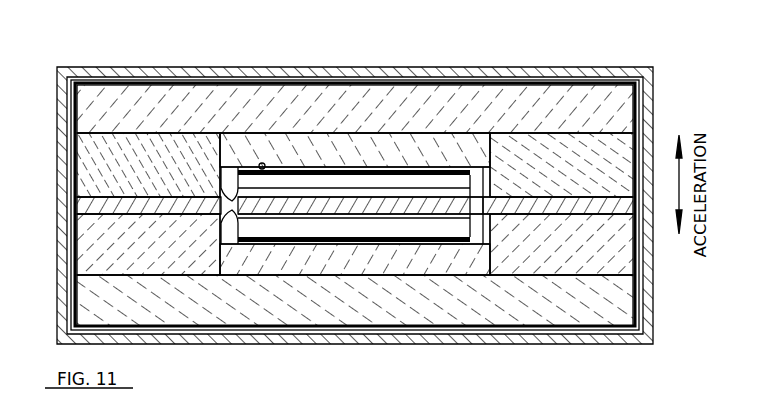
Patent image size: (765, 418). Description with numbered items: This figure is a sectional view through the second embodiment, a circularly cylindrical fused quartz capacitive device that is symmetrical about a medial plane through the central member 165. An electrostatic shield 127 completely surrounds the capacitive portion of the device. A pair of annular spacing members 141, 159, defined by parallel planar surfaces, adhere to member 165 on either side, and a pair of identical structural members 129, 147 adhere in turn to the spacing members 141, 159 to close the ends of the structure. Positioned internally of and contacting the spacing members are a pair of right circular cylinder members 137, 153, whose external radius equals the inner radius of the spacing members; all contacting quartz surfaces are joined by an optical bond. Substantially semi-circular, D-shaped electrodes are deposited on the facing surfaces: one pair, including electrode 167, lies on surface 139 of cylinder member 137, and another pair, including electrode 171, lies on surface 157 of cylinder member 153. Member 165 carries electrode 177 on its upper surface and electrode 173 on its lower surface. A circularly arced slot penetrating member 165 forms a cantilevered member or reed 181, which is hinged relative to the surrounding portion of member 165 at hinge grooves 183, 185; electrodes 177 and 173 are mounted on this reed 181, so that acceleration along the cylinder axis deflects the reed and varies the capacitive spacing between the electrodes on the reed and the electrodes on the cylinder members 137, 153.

The electrostatic shield 127 is at (570, 68).
The structural member 129 is at (439, 90).
The structural member 147 is at (356, 306).
The annular spacing member 141 is at (92, 162).
The annular spacing member 159 is at (97, 256).
The right circular cylinder member 137 is at (318, 157).
The surface 139 is at (261, 163).
The right circular cylinder member 153 is at (378, 270).
The surface 157 is at (326, 244).
The electrode 171 is at (281, 244).
The electrode 173 is at (432, 218).
The electrode 177 is at (375, 169).
The electrode 167 is at (478, 167).
The cantilevered member 181 is at (447, 203).
The member 165 is at (578, 216).
The hinge groove 183 is at (221, 178).
The hinge groove 185 is at (221, 234).